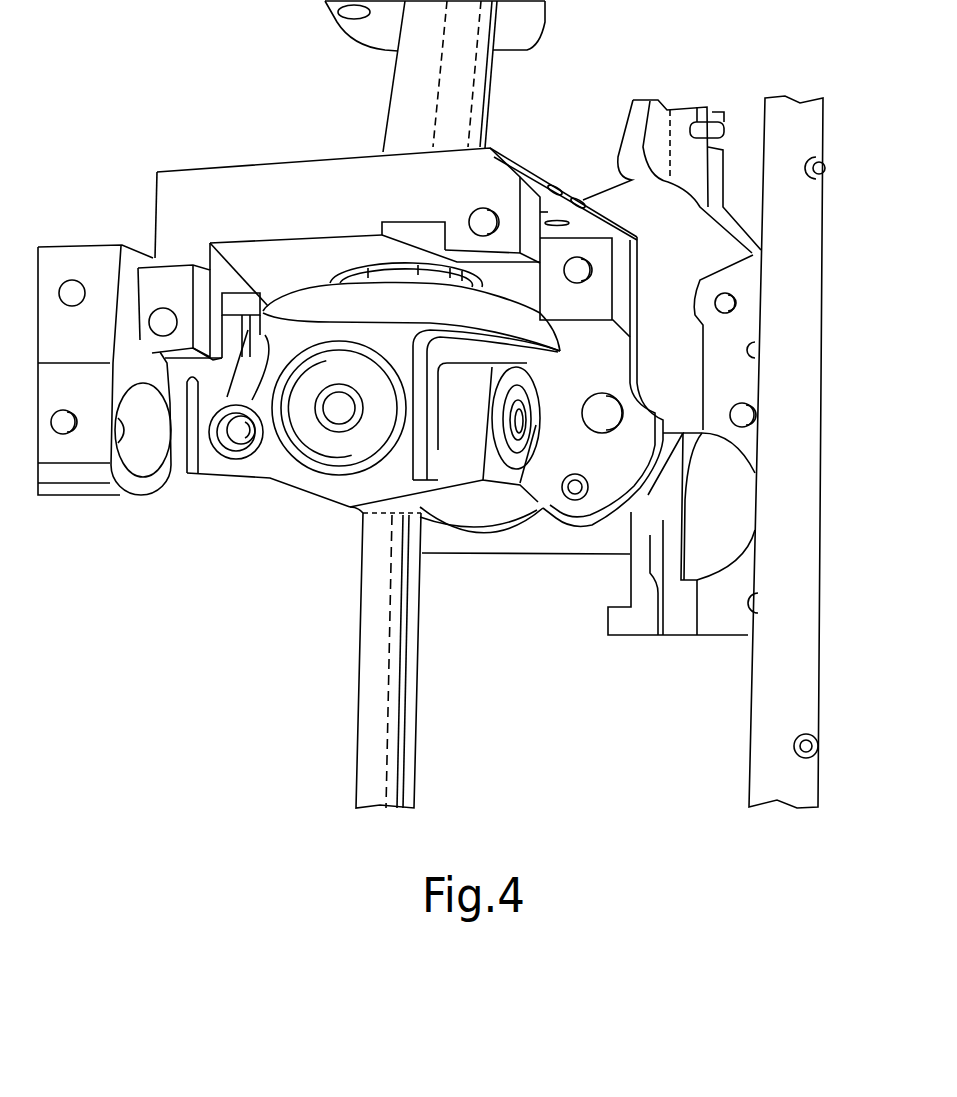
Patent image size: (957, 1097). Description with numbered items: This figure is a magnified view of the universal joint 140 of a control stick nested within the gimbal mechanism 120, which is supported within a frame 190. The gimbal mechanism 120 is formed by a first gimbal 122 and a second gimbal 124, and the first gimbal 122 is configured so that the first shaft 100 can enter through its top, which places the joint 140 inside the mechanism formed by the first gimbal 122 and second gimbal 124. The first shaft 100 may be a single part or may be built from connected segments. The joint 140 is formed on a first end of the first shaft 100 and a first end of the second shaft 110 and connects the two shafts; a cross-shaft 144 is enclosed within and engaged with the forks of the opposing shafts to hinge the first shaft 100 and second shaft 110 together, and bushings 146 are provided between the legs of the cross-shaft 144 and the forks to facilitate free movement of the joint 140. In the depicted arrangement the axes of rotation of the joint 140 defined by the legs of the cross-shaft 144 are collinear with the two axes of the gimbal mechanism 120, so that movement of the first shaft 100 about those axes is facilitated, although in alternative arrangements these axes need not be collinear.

The first shaft 100 is at (468, 100).
The second shaft 110 is at (393, 733).
The gimbal mechanism 120 is at (226, 127).
The first gimbal 122 is at (188, 210).
The second gimbal 124 is at (90, 470).
The joint 140 is at (270, 567).
The cross-shaft 144 is at (323, 421).
The bushings 146 is at (340, 447).
The frame 190 is at (800, 777).